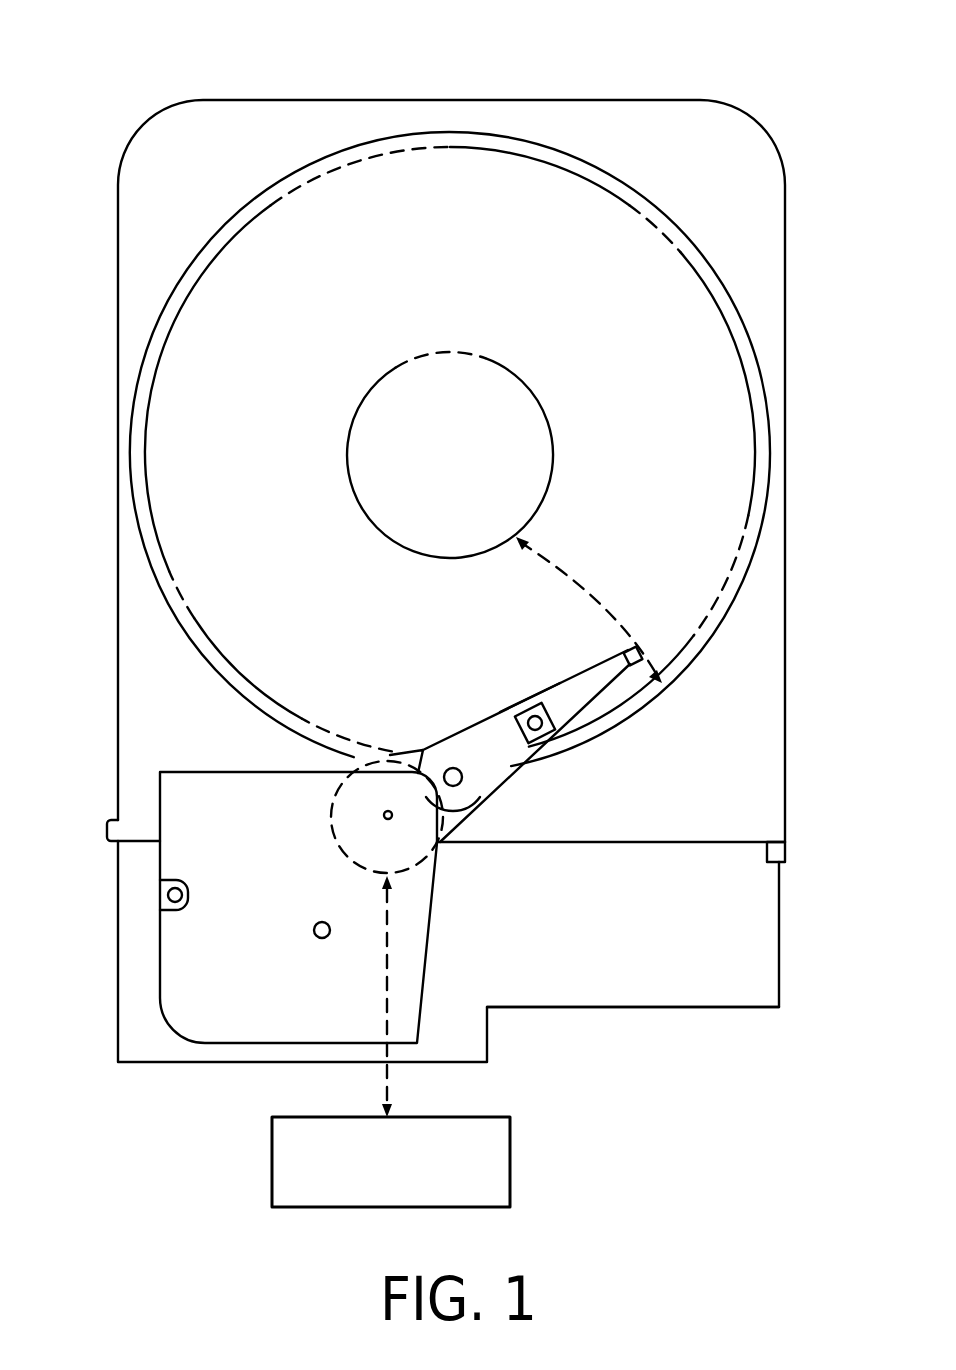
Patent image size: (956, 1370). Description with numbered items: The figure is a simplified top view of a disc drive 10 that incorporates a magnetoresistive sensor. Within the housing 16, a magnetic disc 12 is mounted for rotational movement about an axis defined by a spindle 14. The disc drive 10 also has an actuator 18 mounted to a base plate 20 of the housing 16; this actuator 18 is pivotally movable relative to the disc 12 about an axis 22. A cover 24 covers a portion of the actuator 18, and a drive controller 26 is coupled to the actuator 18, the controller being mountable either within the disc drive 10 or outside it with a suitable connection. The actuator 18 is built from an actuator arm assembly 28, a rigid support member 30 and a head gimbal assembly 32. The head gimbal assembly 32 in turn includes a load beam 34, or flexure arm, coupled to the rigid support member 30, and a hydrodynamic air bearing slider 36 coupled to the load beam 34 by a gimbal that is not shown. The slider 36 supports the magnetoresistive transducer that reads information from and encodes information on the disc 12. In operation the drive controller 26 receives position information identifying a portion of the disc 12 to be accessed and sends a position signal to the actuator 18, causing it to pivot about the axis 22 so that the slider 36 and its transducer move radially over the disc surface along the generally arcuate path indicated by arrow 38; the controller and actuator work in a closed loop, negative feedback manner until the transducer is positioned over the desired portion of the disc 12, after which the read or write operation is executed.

The disc drive 10 is at (270, 80).
The magnetic disc 12 is at (450, 254).
The spindle 14 is at (450, 506).
The housing 16 is at (786, 272).
The actuator 18 is at (467, 873).
The base plate 20 is at (620, 1008).
The axis 22 is at (386, 812).
The cover 24 is at (178, 862).
The drive controller 26 is at (512, 1145).
The actuator arm assembly 28 is at (515, 719).
The rigid support member 30 is at (467, 795).
The head gimbal assembly 32 is at (593, 655).
The load beam 34 is at (560, 683).
The slider 36 is at (640, 647).
The arrow 38 is at (576, 578).